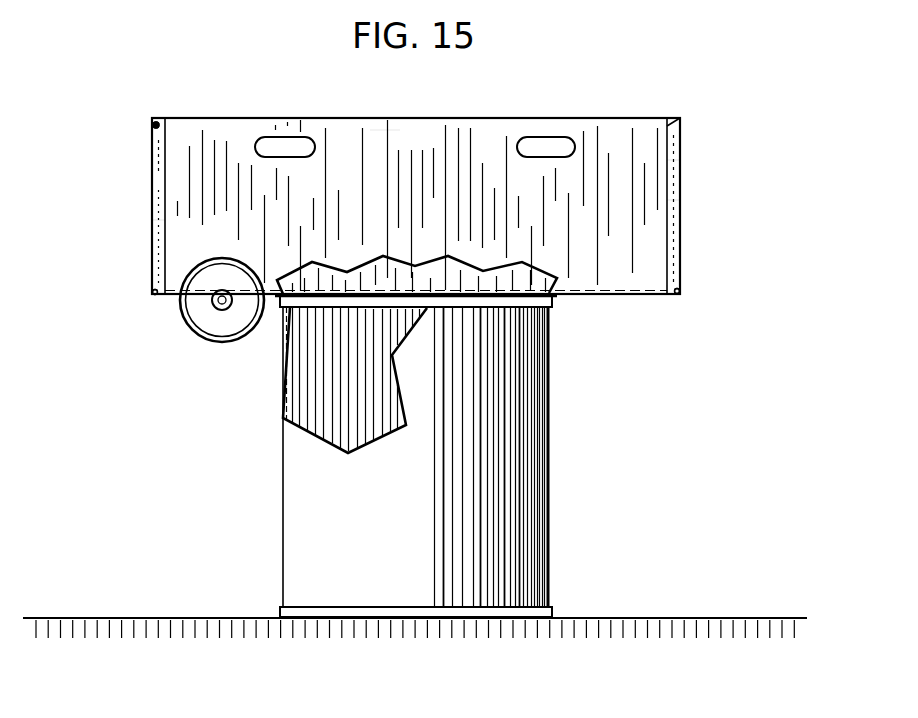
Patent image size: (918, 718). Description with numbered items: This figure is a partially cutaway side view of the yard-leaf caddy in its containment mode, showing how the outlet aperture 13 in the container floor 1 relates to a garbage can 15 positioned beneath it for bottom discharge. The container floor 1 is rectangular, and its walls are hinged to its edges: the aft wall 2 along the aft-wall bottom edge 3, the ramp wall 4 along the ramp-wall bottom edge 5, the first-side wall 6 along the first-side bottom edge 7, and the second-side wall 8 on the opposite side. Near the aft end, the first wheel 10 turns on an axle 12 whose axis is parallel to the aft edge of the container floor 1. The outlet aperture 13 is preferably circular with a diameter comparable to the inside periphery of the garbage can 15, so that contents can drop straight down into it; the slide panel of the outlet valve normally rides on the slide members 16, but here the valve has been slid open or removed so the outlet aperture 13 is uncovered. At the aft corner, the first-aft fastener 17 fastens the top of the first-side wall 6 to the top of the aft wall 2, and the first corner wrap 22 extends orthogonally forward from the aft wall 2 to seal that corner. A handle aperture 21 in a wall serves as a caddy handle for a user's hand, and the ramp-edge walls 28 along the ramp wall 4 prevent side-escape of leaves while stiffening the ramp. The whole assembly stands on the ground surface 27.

The container floor 1 is at (620, 295).
The aft wall 2 is at (152, 182).
The aft-wall bottom edge 3 is at (152, 292).
The ramp wall 4 is at (672, 200).
The ramp-wall bottom edge 5 is at (670, 290).
The first-side wall 6 is at (388, 184).
The first-side bottom edge 7 is at (660, 295).
The second-side wall 8 is at (416, 272).
The first wheel 10 is at (186, 325).
The axle 12 is at (226, 308).
The outlet aperture 13 is at (427, 310).
The garbage can 15 is at (510, 510).
The slide members 16 is at (283, 302).
The first-aft fastener 17 is at (155, 125).
The handle aperture 21 is at (542, 146).
The first corner wrap 22 is at (153, 230).
The ground surface 27 is at (698, 617).
The ramp-edge walls 28 is at (672, 166).